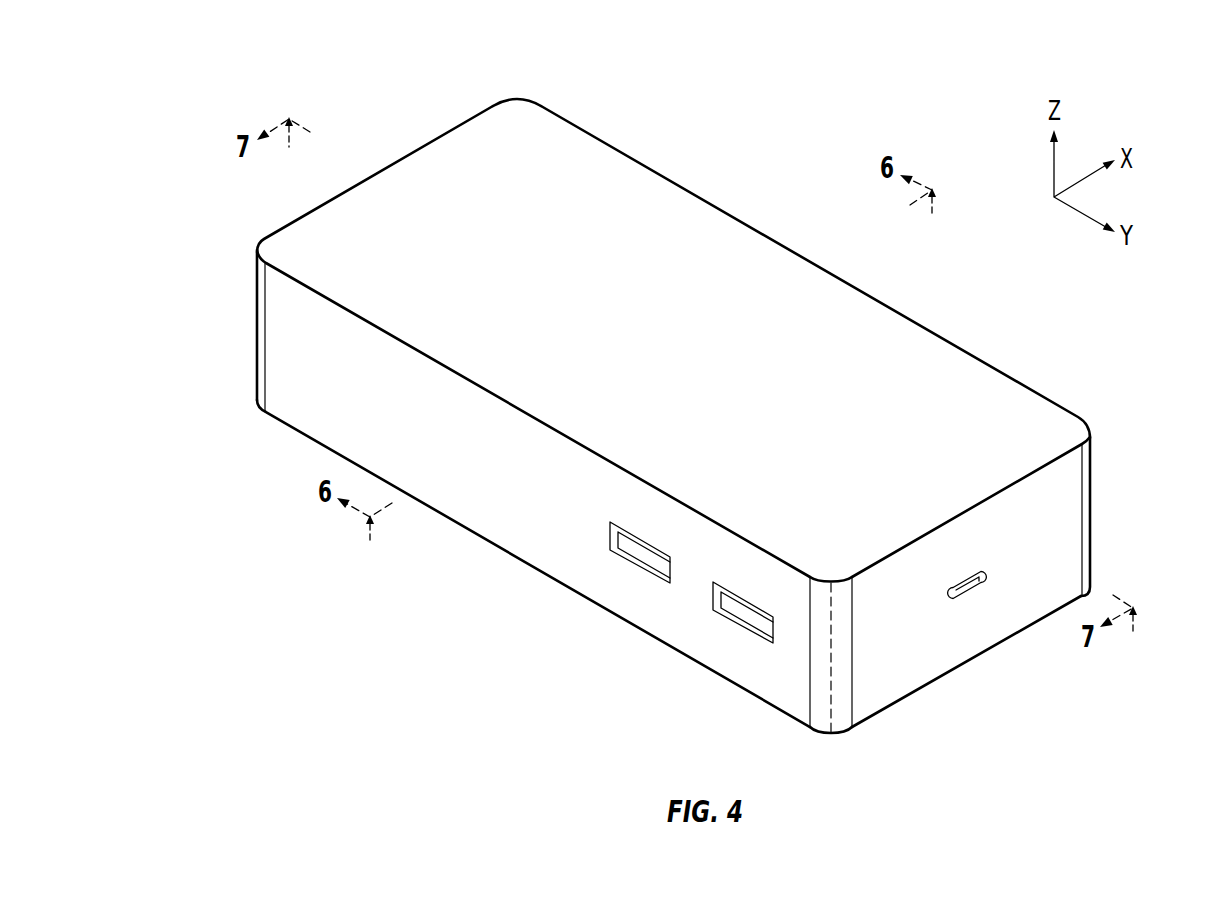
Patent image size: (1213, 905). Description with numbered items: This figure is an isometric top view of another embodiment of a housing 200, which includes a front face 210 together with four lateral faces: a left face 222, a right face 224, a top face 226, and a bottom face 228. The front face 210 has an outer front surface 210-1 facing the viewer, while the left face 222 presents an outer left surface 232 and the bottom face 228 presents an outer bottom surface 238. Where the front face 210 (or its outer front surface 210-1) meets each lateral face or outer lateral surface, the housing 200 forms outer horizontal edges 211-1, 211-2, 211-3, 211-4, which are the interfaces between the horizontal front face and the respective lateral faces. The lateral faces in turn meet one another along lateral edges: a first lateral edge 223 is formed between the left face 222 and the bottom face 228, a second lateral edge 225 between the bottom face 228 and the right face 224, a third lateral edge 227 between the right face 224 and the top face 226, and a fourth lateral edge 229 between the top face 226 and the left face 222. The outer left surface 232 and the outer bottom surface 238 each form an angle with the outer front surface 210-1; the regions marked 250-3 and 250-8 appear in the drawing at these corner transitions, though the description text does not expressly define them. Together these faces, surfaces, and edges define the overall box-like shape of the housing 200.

The housing 200 is at (230, 93).
The front face 210 is at (697, 213).
The outer front surface 210-1 is at (696, 354).
The outer horizontal edge 211-1 is at (307, 288).
The outer horizontal edge 211-2 is at (782, 237).
The outer horizontal edge 211-3 is at (1040, 468).
The outer horizontal edge 211-4 is at (413, 148).
The left face 222 is at (291, 358).
The first lateral edge 223 is at (832, 682).
The right face 224 is at (844, 282).
The second lateral edge 225 is at (1090, 507).
The top face 226 is at (300, 201).
The third lateral edge 227 is at (511, 98).
The bottom face 228 is at (946, 623).
The fourth lateral edge 229 is at (255, 327).
The outer left surface 232 is at (552, 506).
The outer bottom surface 238 is at (1031, 571).
The corner portion 250-3 is at (892, 563).
The corner portion 250-8 is at (803, 622).